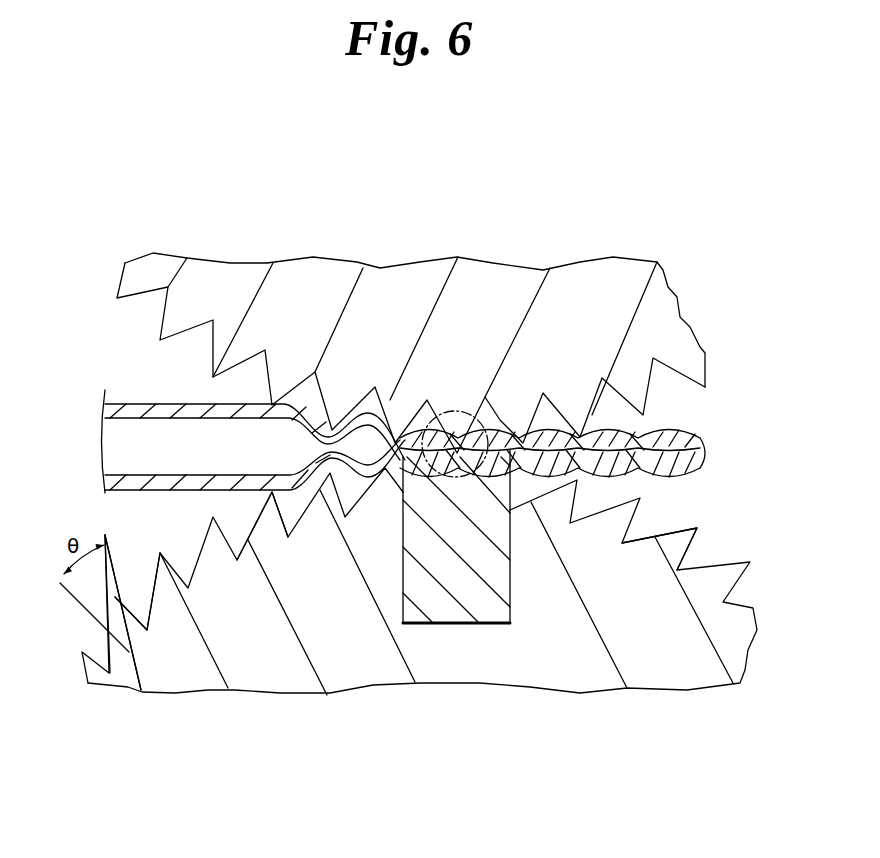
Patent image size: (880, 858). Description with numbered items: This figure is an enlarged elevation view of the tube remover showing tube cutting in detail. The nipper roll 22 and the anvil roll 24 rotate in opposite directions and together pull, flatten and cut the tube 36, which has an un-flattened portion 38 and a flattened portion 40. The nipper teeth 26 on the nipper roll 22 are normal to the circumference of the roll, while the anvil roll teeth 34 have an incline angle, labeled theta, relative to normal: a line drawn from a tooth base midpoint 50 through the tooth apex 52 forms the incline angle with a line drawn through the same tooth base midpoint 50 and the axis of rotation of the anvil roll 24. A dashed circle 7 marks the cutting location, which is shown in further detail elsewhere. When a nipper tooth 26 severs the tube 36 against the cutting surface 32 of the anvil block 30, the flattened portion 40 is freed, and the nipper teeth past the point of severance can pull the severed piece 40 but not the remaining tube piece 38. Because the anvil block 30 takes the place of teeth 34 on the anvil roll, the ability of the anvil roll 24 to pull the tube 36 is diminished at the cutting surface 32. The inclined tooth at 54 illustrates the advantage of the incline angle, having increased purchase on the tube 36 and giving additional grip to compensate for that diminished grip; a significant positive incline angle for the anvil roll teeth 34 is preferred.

The nipper roll 22 is at (113, 283).
The anvil roll 24 is at (84, 670).
The nipper teeth 26 is at (462, 447).
The detail circle (FIG. 7) 7 is at (453, 411).
The tube 36 is at (103, 448).
The un-flattened portion 38 is at (160, 403).
The flattened portion 40 is at (678, 430).
The anvil roll teeth 34 is at (697, 528).
The tooth apex 52 is at (115, 597).
The tooth base midpoint 50 is at (126, 648).
The tooth 54 is at (272, 492).
The anvil block insert 30 is at (495, 603).
The cutting surface 32 is at (435, 457).